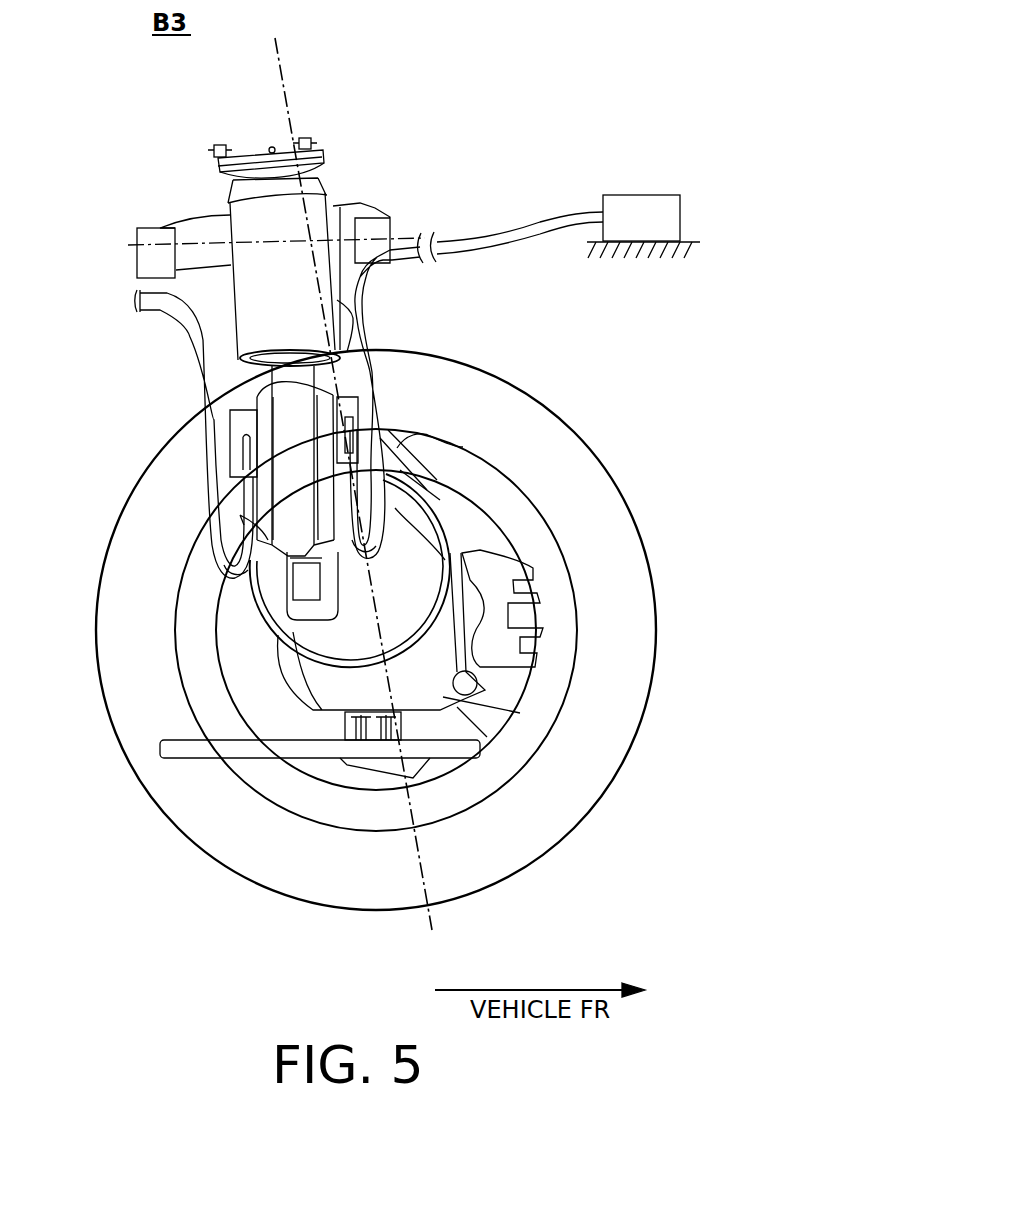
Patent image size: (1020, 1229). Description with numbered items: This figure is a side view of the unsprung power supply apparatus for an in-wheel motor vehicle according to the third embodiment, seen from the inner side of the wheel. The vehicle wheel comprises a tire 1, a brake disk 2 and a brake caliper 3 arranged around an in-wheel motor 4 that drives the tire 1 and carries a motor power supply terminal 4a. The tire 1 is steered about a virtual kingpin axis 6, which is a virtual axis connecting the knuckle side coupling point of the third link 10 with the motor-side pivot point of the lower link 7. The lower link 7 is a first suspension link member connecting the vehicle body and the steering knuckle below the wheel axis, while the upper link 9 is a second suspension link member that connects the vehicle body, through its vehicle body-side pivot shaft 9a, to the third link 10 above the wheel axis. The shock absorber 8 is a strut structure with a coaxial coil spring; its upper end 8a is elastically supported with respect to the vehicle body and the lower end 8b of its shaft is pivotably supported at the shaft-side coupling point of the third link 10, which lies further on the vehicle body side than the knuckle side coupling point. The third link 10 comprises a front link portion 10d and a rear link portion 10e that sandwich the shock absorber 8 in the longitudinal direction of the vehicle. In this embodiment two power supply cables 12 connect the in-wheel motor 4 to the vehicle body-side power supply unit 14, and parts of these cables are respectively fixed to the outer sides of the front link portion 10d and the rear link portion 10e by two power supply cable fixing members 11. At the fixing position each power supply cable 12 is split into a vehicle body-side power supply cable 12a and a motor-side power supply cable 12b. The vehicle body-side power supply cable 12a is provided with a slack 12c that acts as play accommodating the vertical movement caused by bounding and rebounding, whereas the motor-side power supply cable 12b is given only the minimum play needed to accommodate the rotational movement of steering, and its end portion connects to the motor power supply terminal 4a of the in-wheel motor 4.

The tire 1 is at (552, 406).
The brake disk 2 is at (478, 507).
The brake caliper 3 is at (526, 546).
The in-wheel motor 4 is at (285, 640).
The motor power supply terminal 4a is at (450, 498).
The virtual kingpin axis 6 is at (296, 91).
The lower link 7 is at (283, 765).
The shock absorber 8 is at (226, 318).
The upper end of the shock absorber 8a is at (270, 149).
The lower end of the shock absorber shaft 8b is at (307, 582).
The upper link 9 is at (192, 212).
The vehicle body-side pivot shaft 9a is at (150, 257).
The third link 10 is at (256, 454).
The front link portion 10d is at (356, 598).
The rear link portion 10e is at (287, 566).
The power supply cable fixing member 11 is at (230, 428).
The power supply cable 12 is at (542, 222).
The vehicle body-side power supply cable 12a is at (363, 330).
The motor-side power supply cable 12b is at (245, 518).
The slack 12c is at (212, 575).
The vehicle body-side power supply unit 14 is at (640, 195).